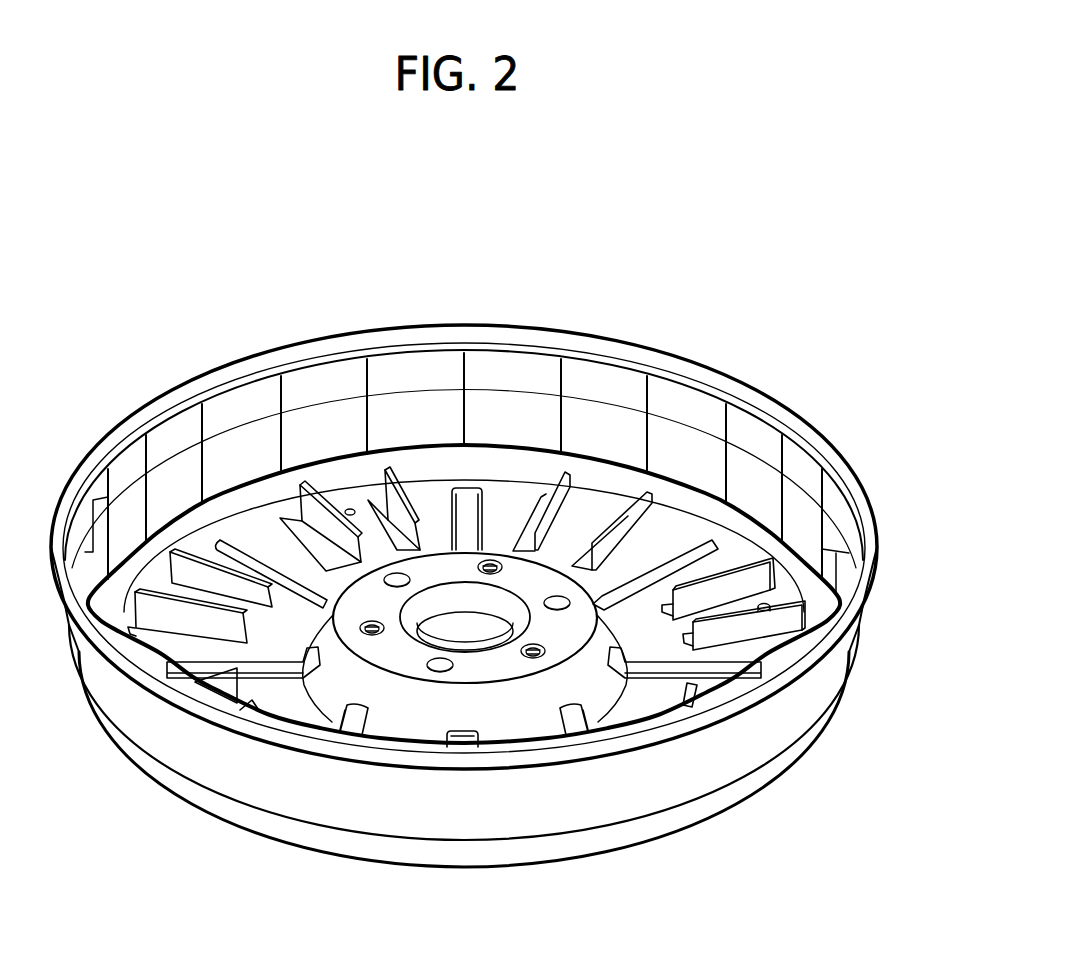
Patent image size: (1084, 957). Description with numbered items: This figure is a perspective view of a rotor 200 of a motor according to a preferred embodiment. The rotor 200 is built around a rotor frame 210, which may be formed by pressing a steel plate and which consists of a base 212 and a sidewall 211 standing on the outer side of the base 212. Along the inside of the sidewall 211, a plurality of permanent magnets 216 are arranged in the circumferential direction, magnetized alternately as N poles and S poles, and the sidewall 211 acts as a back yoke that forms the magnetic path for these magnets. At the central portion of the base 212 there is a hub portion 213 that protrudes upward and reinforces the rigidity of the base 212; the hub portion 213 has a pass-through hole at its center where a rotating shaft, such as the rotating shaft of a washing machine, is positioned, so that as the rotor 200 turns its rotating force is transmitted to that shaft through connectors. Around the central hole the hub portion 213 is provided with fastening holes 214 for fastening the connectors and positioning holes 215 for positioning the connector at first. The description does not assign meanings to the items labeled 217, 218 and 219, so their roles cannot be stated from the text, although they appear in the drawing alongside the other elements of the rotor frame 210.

The rotor 200 is at (772, 333).
The rotor frame 210 is at (838, 449).
The sidewall 211 is at (813, 697).
The base 212 is at (675, 532).
The hub portion 213 is at (513, 712).
The fastening holes 214 is at (440, 668).
The positioning holes 215 is at (367, 635).
The permanent magnets 216 is at (510, 380).
The blade 217 is at (200, 575).
The blade 218 is at (312, 520).
The hub 219 is at (430, 601).